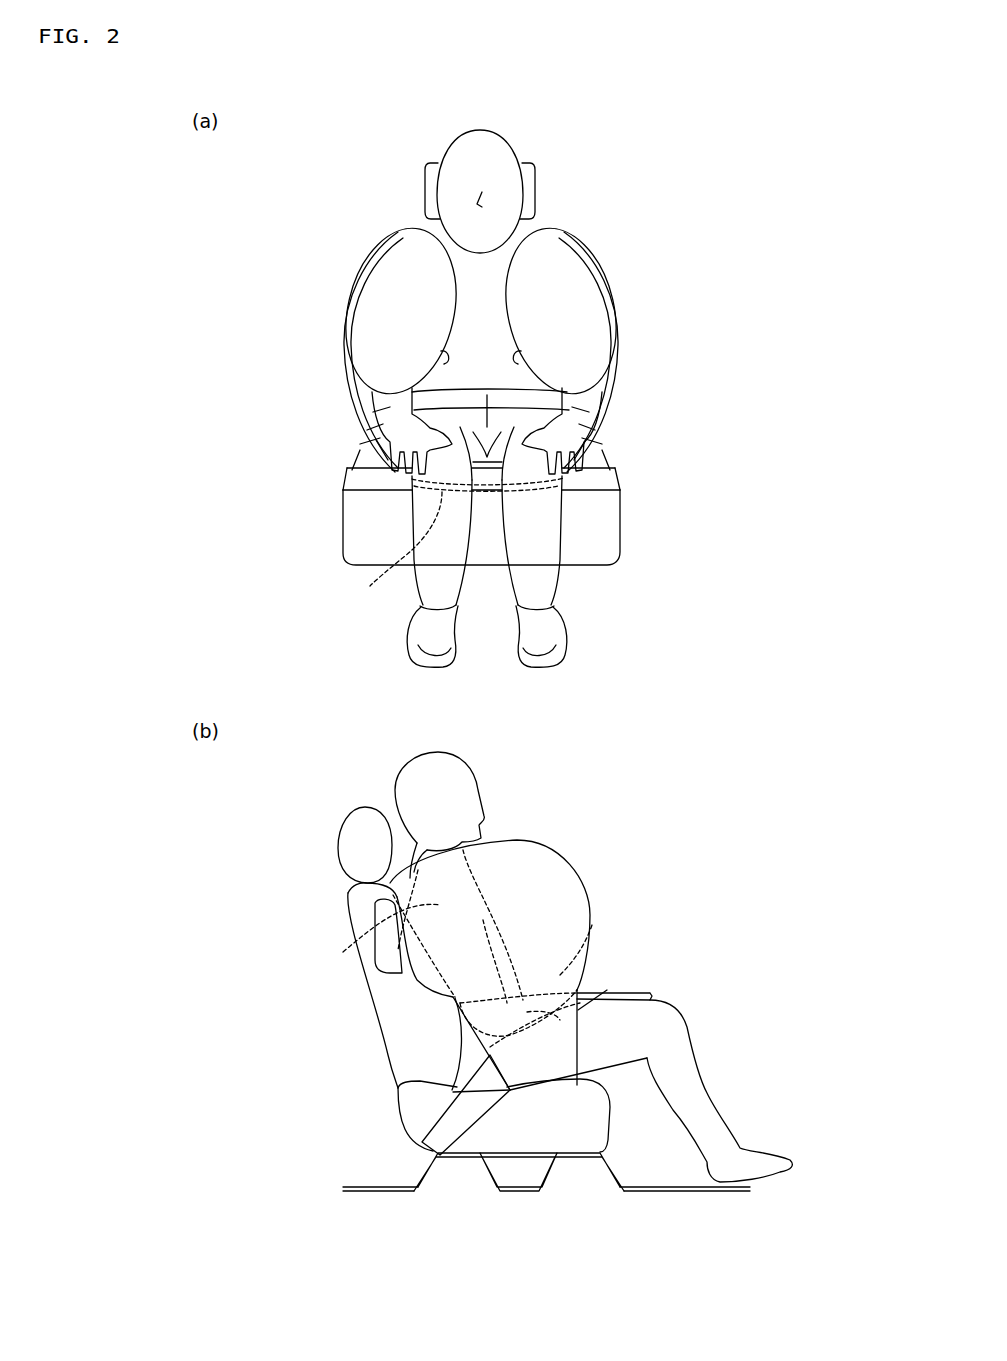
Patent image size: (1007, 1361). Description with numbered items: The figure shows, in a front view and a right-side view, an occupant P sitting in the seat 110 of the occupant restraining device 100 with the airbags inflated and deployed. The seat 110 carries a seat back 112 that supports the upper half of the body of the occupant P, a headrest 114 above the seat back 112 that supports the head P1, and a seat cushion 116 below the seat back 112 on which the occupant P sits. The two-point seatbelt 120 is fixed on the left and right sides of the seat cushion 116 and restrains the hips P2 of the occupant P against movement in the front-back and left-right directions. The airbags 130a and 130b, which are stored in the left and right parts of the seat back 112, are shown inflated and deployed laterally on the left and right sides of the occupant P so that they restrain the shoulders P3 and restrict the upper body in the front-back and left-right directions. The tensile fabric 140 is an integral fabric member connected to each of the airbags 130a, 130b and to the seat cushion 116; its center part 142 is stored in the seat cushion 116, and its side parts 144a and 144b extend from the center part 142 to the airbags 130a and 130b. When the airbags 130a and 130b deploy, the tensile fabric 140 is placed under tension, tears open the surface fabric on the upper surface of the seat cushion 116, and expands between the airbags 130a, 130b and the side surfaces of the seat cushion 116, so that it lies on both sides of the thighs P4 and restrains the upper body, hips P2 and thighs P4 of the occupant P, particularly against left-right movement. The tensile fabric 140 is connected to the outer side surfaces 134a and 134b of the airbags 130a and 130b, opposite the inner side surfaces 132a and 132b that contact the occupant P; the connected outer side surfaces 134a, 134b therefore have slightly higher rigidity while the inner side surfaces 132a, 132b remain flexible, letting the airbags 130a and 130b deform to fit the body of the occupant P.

The occupant restraining device 100 is at (366, 192).
The seat 110 is at (333, 902).
The seat back 112 is at (368, 405).
The headrest 114 is at (535, 195).
The seat cushion 116 is at (623, 526).
The two-point seatbelt 120 is at (617, 458).
The airbag 130a is at (385, 291).
The airbag 130b is at (578, 291).
The inner side surface 132a is at (440, 360).
The inner side surface 132b is at (522, 360).
The outer side surface 134a is at (372, 262).
The outer side surface 134b is at (590, 262).
The tensile fabric 140 is at (617, 409).
The center part 142 is at (454, 542).
The side part 144a is at (362, 425).
The side part 144b is at (604, 392).
The occupant P is at (440, 136).
The head P1 is at (520, 143).
The hips P2 is at (445, 1067).
The shoulders P3 is at (343, 952).
The thighs P4 is at (615, 1052).